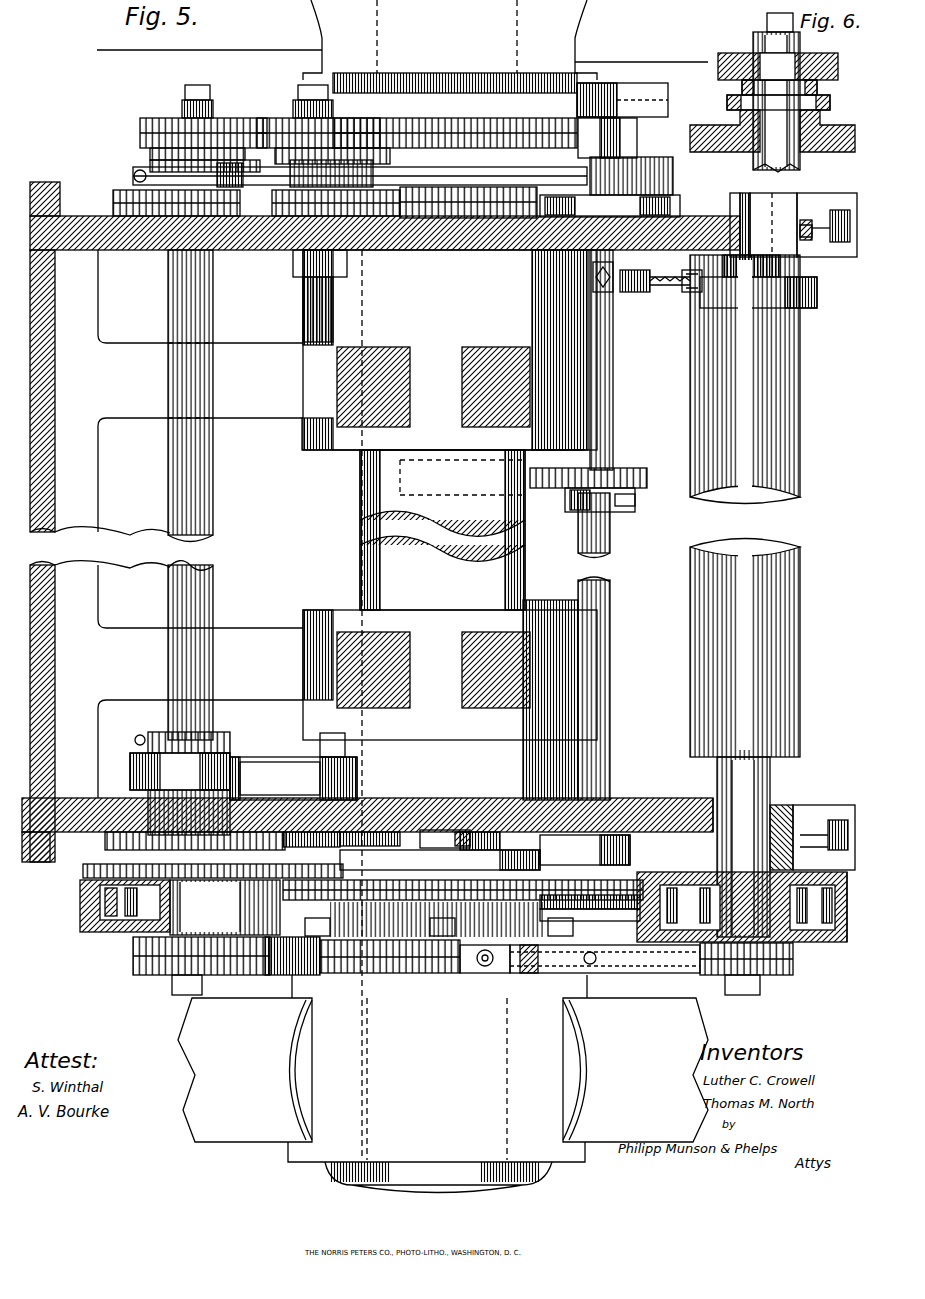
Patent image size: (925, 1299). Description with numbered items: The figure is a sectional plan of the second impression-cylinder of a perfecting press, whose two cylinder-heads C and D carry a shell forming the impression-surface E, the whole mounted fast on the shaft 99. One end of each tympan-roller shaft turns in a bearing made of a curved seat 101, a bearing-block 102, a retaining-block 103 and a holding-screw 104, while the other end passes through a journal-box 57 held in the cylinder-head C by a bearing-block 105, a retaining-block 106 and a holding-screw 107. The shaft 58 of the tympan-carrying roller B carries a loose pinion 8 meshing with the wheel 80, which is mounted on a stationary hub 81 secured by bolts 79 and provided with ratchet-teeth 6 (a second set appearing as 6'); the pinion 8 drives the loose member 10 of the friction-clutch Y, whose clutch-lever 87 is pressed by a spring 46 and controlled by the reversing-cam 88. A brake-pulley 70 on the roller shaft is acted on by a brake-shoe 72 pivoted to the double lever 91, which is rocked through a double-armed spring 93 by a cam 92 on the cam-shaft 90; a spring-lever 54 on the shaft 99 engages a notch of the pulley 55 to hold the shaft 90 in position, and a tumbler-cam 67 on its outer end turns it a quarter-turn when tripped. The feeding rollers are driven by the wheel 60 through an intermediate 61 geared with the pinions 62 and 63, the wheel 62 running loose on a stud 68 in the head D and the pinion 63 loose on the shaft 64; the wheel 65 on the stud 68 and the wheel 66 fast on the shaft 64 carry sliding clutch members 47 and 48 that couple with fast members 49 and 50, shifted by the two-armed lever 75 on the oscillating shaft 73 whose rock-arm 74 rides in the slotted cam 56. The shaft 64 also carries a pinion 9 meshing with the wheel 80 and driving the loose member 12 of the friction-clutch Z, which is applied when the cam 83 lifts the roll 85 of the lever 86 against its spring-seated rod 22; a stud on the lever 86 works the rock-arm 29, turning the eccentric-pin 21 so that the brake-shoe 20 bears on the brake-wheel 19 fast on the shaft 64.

In FIG. 5, the shaft 99 is at (378, 58).
In FIG. 5, the pinion 63 is at (140, 128).
In FIG. 6, the pinion 63 is at (735, 47).
In FIG. 5, the intermediate 61 is at (255, 120).
In FIG. 5, the wheel 62 is at (275, 120).
In FIG. 5, the wheel 60 is at (430, 125).
In FIG. 5, the tumbler-cam 67 is at (645, 90).
In FIG. 5, the slotted cam 56 is at (636, 155).
In FIG. 5, the fast clutch member 50 is at (150, 153).
In FIG. 6, the fast clutch member 50 is at (742, 86).
In FIG. 5, the sliding clutch member 48 is at (150, 165).
In FIG. 6, the sliding clutch member 48 is at (727, 103).
In FIG. 5, the fast clutch member 49 is at (392, 158).
In FIG. 5, the two-armed lever 75 is at (360, 176).
In FIG. 5, the sliding clutch member 47 is at (295, 173).
In FIG. 5, the rock-arm 74 is at (631, 176).
In FIG. 5, the wheel 66 is at (113, 207).
In FIG. 6, the wheel 66 is at (735, 150).
In FIG. 5, the wheel 65 is at (400, 205).
In FIG. 5, the oscillating shaft 73 is at (540, 200).
In FIG. 5, the curved seat 101 is at (740, 195).
In FIG. 5, the bearing-block 102 is at (790, 187).
In FIG. 5, the retaining-block 103 is at (838, 187).
In FIG. 5, the holding-screw 104 is at (842, 245).
In FIG. 5, the stud 68 is at (310, 250).
In FIG. 5, the shaft 64 is at (190, 495).
In FIG. 5, the cam-shaft 90 is at (614, 405).
In FIG. 5, the double-armed spring 93 is at (601, 277).
In FIG. 5, the cam 92 is at (632, 294).
In FIG. 5, the double lever 91 is at (665, 290).
In FIG. 5, the brake-shoe 72 is at (690, 294).
In FIG. 5, the brake-pulley 70 is at (758, 281).
In FIG. 5, the shaft 58 is at (743, 847).
In FIG. 5, the journal-box 57 is at (716, 800).
In FIG. 5, the pulley 55 is at (640, 480).
In FIG. 5, the spring-lever 54 is at (543, 490).
In FIG. 5, the brake-shoe 20 is at (243, 757).
In FIG. 5, the brake-wheel 19 is at (180, 794).
In FIG. 5, the eccentric-pin 21 is at (362, 775).
In FIG. 5, the rock-arm 29 is at (375, 832).
In FIG. 5, the spring-seated rod 22 is at (465, 830).
In FIG. 5, the bearing-block 105 is at (782, 829).
In FIG. 5, the retaining-block 106 is at (812, 805).
In FIG. 5, the holding-screw 107 is at (838, 820).
In FIG. 5, the spring 46 is at (598, 850).
In FIG. 5, the lever 86 is at (300, 862).
In FIG. 5, the reversing-cam 88 is at (453, 859).
In FIG. 5, the roll 85 is at (463, 890).
In FIG. 5, the cam 83 is at (600, 900).
In FIG. 5, the clutch-lever 87 is at (590, 917).
In FIG. 5, the bolts 79 is at (430, 928).
In FIG. 5, the loose member 12 is at (225, 907).
In FIG. 5, the loose member 10 is at (844, 923).
In FIG. 5, the pinion 9 is at (148, 975).
In FIG. 5, the wheel 80 is at (330, 975).
In FIG. 5, the stationary hub 81 is at (482, 973).
In FIG. 5, the ratchet-teeth 6 is at (603, 973).
In FIG. 5, the bar 6' is at (558, 972).
In FIG. 5, the pinion 8 is at (783, 975).
In FIG. 5, the cylinder-head D is at (92, 252).
In FIG. 5, the impression-surface E is at (50, 496).
In FIG. 5, the cylinder-head C is at (72, 798).
In FIG. 5, the tympan-carrying roller B is at (745, 506).
In FIG. 5, the friction-clutch Z is at (108, 906).
In FIG. 5, the friction-clutch Y is at (823, 942).